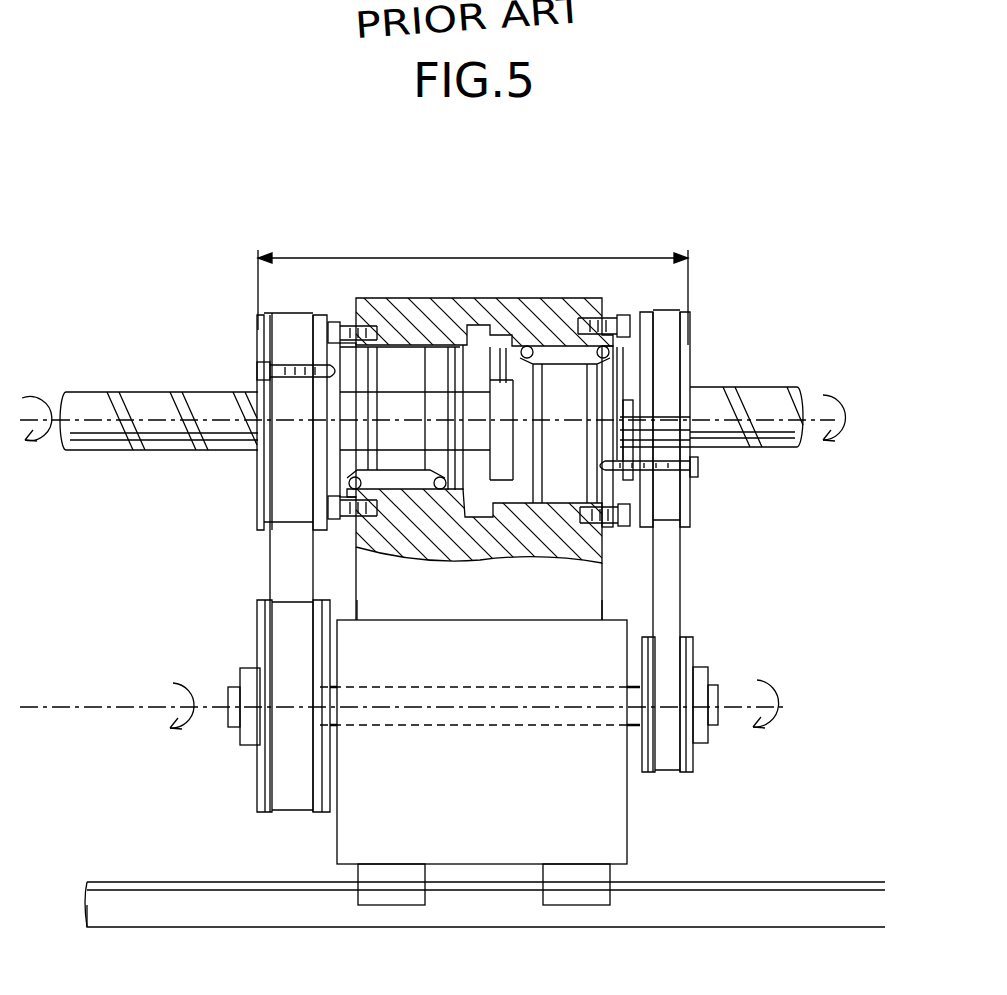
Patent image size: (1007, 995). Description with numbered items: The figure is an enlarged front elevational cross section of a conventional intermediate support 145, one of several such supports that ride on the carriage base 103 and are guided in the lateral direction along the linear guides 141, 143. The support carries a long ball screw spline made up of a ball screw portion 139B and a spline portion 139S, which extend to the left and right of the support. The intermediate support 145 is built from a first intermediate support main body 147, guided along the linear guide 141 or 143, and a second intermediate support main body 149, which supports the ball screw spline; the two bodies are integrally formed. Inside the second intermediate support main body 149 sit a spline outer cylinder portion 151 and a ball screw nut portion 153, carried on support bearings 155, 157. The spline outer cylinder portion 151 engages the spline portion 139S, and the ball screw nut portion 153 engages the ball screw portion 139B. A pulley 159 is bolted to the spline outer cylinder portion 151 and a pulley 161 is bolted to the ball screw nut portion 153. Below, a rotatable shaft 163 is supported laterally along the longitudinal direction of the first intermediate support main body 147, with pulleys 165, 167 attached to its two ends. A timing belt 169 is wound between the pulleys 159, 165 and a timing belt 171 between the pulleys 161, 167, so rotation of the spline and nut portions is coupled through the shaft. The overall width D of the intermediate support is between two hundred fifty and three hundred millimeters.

The carriage base 103 is at (272, 905).
The ball screw portion 139B is at (146, 386).
The spline portion 139S is at (812, 440).
The linear guide 141 is at (146, 882).
The linear guide 143 is at (485, 871).
The intermediate support 145 is at (798, 318).
The first intermediate support main body 147 is at (627, 825).
The second intermediate support main body 149 is at (547, 340).
The spline outer cylinder portion 151 is at (396, 362).
The ball screw nut portion 153 is at (512, 358).
The support bearing 155 is at (403, 495).
The support bearing 157 is at (587, 302).
The pulley 159 is at (256, 365).
The pulley 161 is at (690, 340).
The rotatable shaft 163 is at (458, 718).
The pulley 165 is at (257, 772).
The pulley 167 is at (693, 642).
The timing belt 169 is at (258, 575).
The timing belt 171 is at (685, 585).
The width of the intermediate support D is at (473, 285).